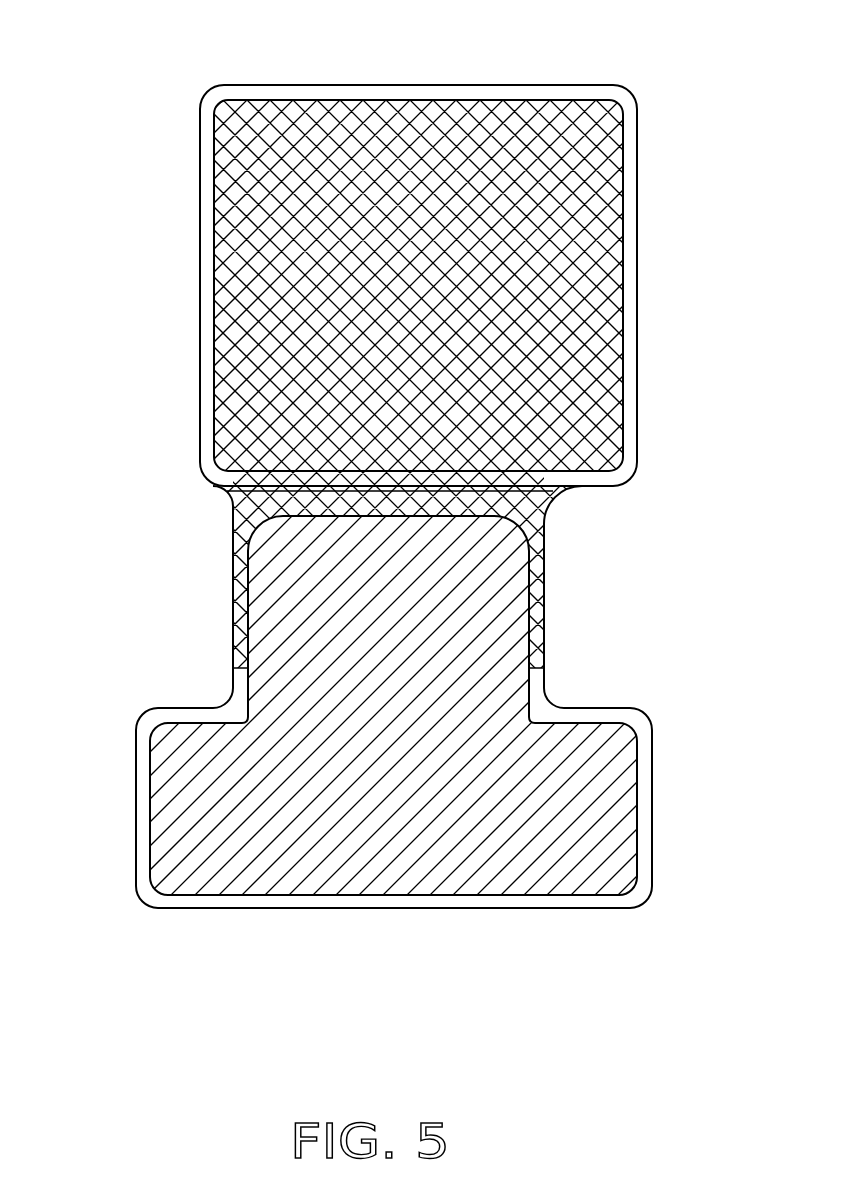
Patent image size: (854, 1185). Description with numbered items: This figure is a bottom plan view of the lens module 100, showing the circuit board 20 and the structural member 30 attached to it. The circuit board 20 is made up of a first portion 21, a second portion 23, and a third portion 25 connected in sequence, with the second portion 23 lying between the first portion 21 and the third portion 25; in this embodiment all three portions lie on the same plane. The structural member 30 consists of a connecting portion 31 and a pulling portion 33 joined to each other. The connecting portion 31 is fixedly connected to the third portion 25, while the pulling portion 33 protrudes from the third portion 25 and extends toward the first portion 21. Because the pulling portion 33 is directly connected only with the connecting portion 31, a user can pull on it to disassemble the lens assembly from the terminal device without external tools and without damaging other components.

The lens module 100 is at (305, 29).
The circuit board 20 is at (686, 517).
The first portion 21 is at (598, 474).
The second portion 23 is at (535, 583).
The third portion 25 is at (585, 715).
The structural member 30 is at (107, 602).
The pulling portion 33 is at (295, 660).
The connecting portion 31 is at (215, 747).